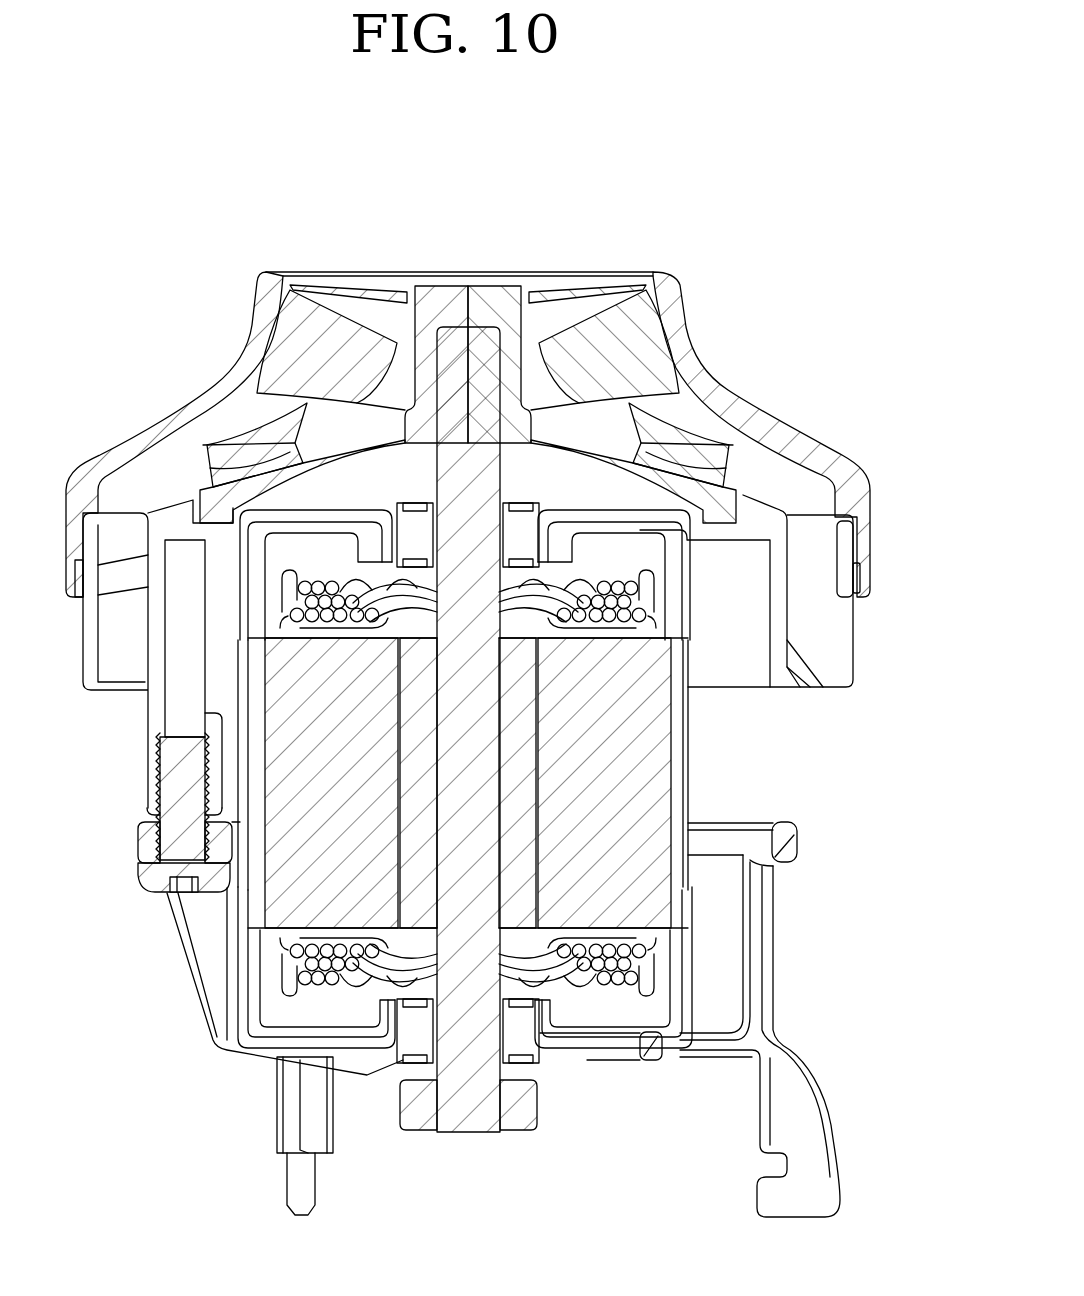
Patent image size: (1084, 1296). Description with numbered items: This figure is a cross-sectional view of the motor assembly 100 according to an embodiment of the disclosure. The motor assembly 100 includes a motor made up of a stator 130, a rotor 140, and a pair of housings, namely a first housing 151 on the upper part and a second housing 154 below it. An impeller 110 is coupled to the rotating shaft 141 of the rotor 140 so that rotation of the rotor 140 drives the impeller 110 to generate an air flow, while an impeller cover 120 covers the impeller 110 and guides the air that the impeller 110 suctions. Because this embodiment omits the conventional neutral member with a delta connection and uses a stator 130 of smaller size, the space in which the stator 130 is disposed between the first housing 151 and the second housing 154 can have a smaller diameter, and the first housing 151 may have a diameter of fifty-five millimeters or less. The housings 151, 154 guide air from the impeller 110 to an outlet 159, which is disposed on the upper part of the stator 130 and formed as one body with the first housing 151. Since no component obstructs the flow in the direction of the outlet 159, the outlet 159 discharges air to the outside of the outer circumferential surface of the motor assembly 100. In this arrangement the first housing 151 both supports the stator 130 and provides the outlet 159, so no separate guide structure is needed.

The motor assembly 100 is at (487, 137).
The impeller 110 is at (597, 297).
The impeller cover 120 is at (210, 398).
The stator 130 is at (303, 707).
The rotor 140 is at (517, 740).
The rotating shaft 141 is at (460, 1105).
The first housing 151 is at (856, 641).
The second housing 154 is at (191, 1022).
The outlet 159 is at (812, 685).